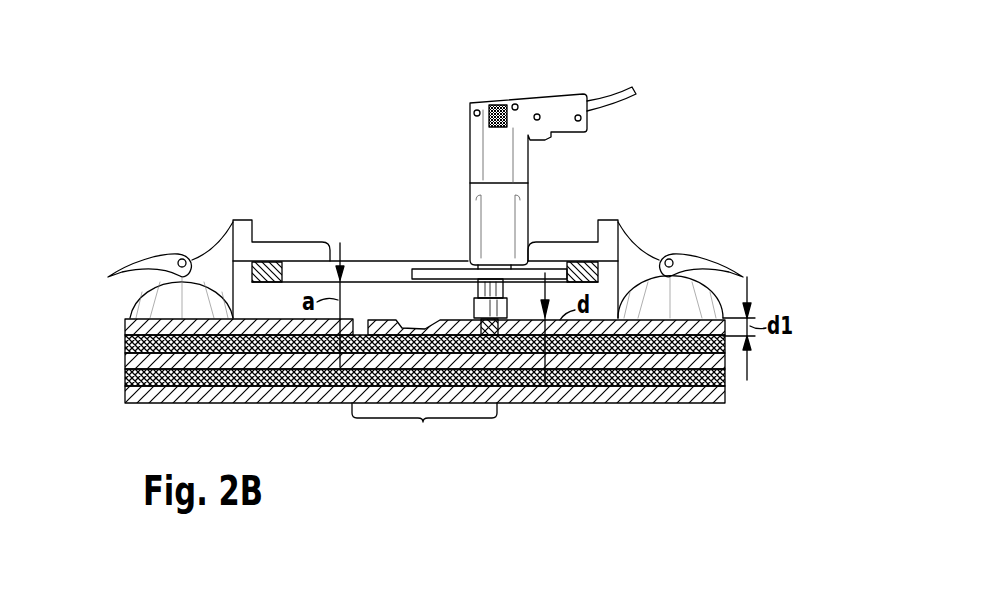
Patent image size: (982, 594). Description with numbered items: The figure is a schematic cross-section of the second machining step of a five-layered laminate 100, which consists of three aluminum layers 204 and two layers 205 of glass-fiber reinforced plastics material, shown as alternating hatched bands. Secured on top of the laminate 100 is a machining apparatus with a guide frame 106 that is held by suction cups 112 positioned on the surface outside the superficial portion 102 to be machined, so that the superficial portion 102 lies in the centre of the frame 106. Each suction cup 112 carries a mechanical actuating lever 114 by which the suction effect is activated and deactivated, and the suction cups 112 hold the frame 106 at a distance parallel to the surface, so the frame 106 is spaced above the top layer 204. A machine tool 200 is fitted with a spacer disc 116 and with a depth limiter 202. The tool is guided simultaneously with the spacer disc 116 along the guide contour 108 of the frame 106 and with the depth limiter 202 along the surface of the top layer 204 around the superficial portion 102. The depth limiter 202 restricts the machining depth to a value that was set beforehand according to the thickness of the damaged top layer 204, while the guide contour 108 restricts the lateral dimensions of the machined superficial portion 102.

The laminate 100 is at (452, 355).
The superficial portion 102 is at (424, 431).
The guide frame 106 is at (586, 262).
The guide contour 108 is at (298, 282).
The suction cup 112 is at (653, 297).
The mechanical actuating lever 114 is at (727, 262).
The spacer disc 116 is at (427, 268).
The machine tool 200 is at (497, 172).
The depth limiter 202 is at (480, 310).
The aluminum layer 204 is at (127, 325).
The layer of glass-fiber reinforced plastics material 205 is at (127, 342).